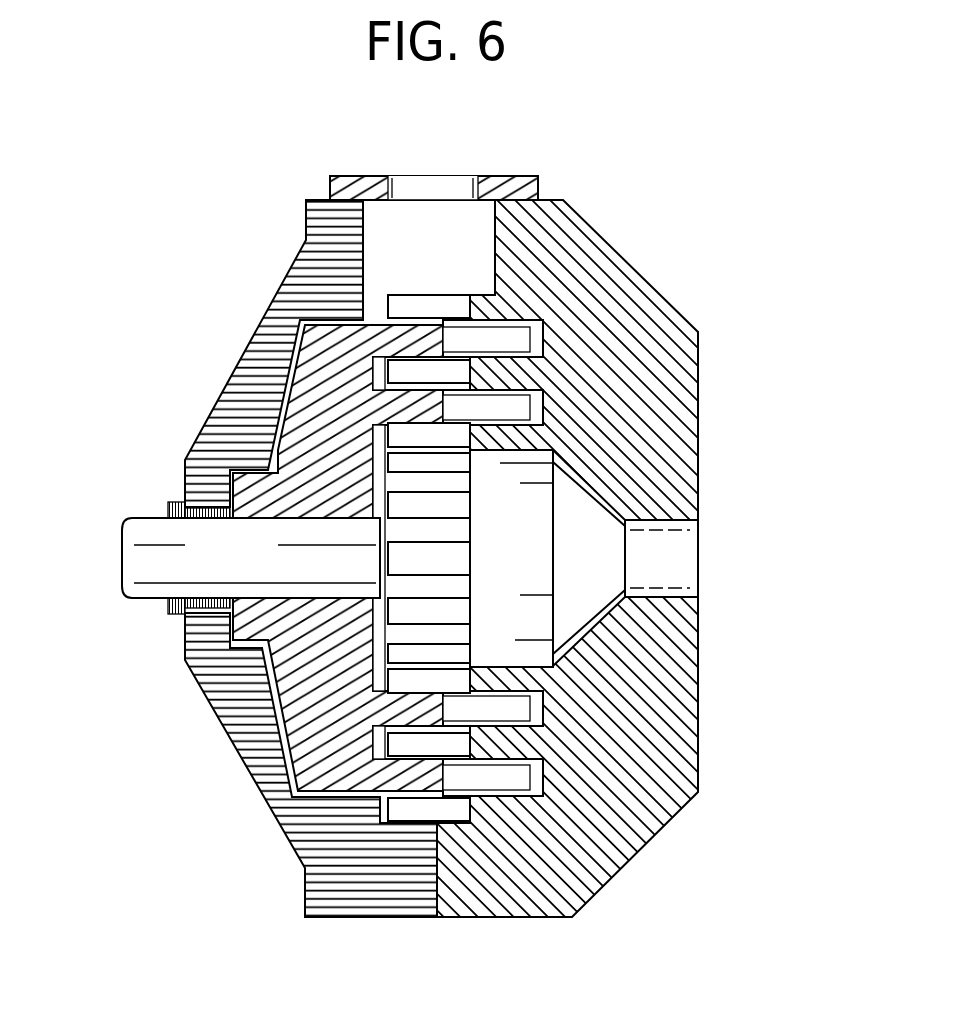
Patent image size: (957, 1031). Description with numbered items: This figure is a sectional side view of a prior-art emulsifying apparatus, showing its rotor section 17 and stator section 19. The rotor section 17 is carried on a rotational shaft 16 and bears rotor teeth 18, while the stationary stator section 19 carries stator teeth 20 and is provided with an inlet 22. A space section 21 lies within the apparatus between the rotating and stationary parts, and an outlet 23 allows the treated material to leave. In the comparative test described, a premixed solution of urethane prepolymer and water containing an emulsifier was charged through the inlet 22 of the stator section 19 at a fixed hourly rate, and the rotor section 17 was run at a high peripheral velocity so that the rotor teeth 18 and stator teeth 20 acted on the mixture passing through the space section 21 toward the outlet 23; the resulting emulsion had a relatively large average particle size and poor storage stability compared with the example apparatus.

The rotational shaft 16 is at (146, 537).
The rotor section 17 is at (290, 653).
The rotor teeth 18 is at (475, 712).
The stator section 19 is at (625, 743).
The stator teeth 20 is at (397, 812).
The space section 21 is at (452, 557).
The inlet 22 is at (668, 590).
The outlet 23 is at (452, 176).